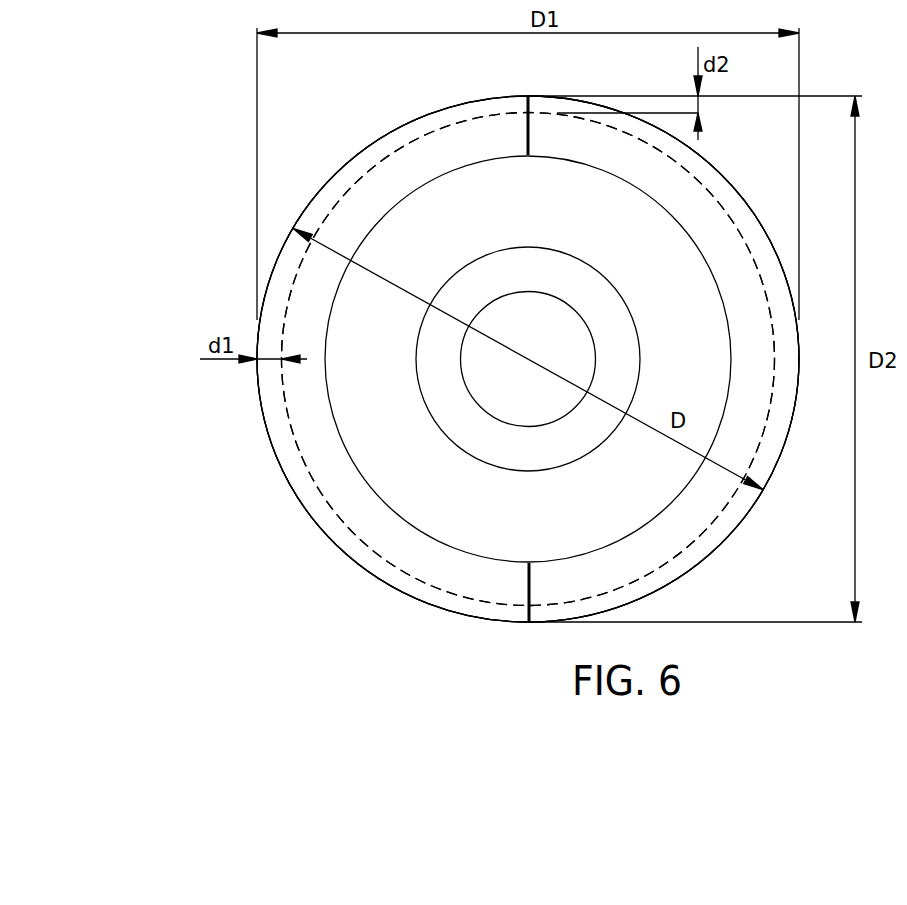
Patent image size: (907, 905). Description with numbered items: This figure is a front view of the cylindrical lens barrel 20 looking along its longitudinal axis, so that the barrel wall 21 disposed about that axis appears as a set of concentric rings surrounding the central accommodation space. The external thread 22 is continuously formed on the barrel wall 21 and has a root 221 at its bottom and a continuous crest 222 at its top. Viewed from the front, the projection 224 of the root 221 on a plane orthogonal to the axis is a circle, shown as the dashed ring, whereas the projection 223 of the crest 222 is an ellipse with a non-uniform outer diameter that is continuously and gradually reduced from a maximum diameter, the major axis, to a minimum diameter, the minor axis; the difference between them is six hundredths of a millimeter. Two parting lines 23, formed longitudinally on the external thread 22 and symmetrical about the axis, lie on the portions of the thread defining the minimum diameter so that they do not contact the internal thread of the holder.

The lens barrel 20 is at (270, 553).
The barrel wall 21 is at (460, 553).
The external thread 22 is at (281, 433).
The parting lines 23 is at (528, 133).
The root 221 is at (283, 387).
The projection of the root 224 is at (441, 359).
The crest 222 is at (287, 479).
The projection of the crest 223 is at (448, 359).